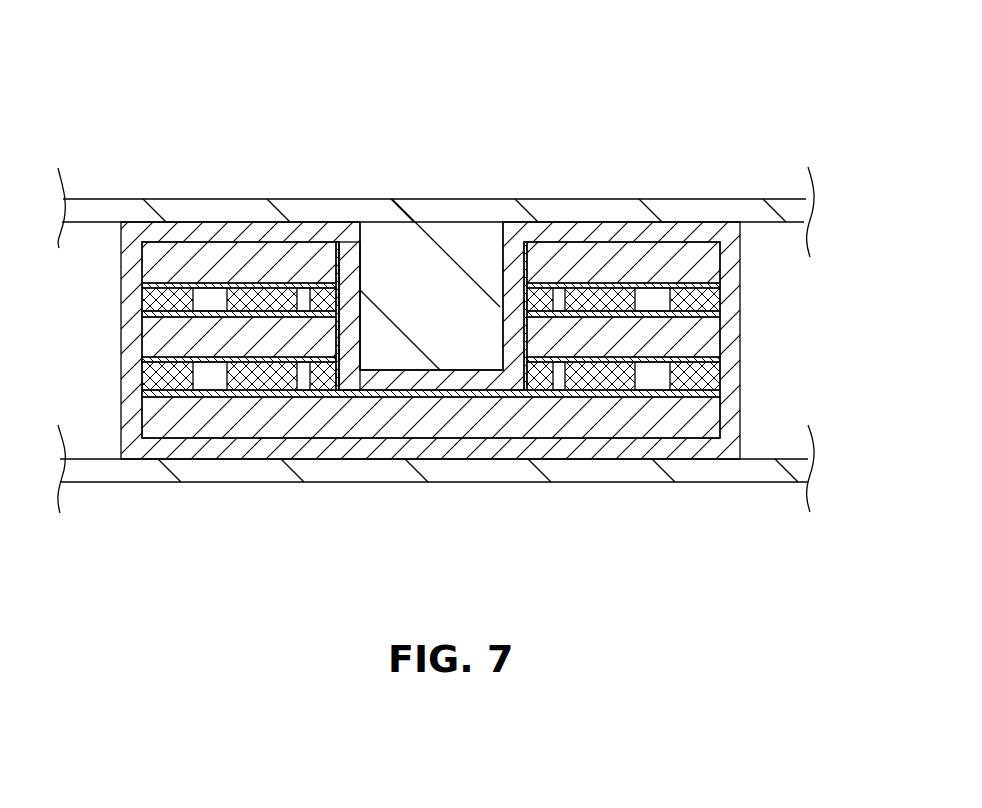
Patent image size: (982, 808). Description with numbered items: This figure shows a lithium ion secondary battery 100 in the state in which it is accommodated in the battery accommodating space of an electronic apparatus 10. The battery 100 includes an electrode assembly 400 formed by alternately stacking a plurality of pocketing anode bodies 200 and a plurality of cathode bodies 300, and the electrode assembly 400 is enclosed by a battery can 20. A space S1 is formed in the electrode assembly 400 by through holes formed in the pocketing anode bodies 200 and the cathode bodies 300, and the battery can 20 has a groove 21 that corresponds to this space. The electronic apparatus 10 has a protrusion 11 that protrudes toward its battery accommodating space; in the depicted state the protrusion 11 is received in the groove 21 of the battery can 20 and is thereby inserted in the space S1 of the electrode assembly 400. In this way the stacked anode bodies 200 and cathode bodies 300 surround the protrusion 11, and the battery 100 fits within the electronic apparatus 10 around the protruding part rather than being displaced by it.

The electronic apparatus 10 is at (101, 199).
The protrusion 11 is at (433, 278).
The battery can 20 is at (128, 348).
The groove 21 is at (370, 258).
The space S1 is at (523, 278).
The lithium ion secondary battery 100 is at (568, 73).
The pocketing anode body 200 is at (733, 372).
The cathode body 300 is at (733, 332).
The electrode assembly 400 is at (520, 374).